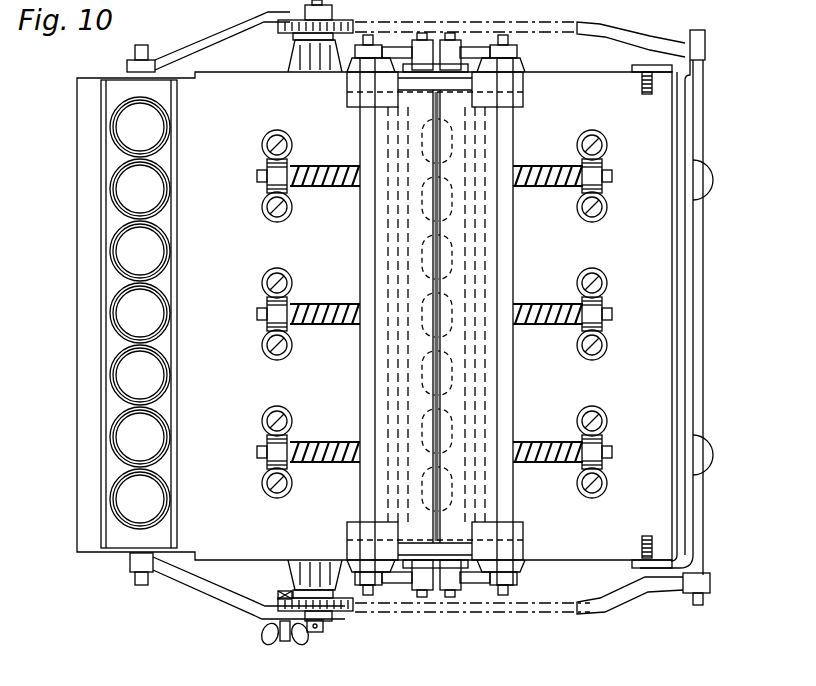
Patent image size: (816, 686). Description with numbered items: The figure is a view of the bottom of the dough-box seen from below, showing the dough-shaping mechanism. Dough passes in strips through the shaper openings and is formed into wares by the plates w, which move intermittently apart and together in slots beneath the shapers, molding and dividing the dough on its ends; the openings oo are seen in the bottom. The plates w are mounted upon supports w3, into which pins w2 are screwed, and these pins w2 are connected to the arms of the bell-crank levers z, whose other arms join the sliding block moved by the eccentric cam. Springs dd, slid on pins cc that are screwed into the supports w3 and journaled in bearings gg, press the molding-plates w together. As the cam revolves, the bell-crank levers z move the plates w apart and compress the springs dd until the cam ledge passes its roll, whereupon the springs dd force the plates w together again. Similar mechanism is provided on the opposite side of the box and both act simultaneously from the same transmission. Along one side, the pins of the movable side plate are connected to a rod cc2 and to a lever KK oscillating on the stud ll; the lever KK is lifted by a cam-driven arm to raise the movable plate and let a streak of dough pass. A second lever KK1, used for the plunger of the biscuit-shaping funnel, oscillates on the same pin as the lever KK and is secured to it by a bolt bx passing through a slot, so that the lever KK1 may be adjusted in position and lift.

The openings / ports oo is at (438, 500).
The molding-plate w is at (460, 290).
The support w3 is at (372, 378).
The pin w2 is at (510, 596).
The bell-crank lever z is at (516, 50).
The bearing gg is at (595, 3).
The spring dd is at (436, 245).
The pin cc is at (612, 458).
The rod cc2 is at (704, 228).
The lever KK is at (612, 600).
The lever KK1 is at (205, 587).
The stud ll is at (324, 630).
The bolt bx is at (283, 642).